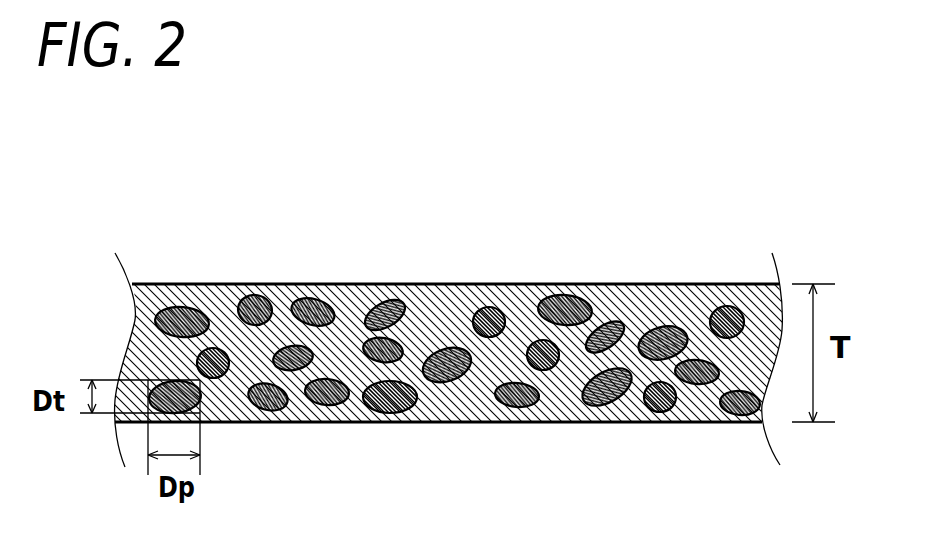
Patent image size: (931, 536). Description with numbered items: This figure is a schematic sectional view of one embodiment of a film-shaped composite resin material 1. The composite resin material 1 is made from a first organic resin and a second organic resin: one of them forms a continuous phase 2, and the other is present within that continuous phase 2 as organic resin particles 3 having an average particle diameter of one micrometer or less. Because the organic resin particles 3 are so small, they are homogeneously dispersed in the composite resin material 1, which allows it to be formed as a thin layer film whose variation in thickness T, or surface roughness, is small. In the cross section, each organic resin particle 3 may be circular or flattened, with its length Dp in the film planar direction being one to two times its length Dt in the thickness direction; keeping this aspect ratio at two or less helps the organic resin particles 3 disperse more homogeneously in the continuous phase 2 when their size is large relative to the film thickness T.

The composite resin material 1 is at (611, 211).
The continuous phase 2 is at (434, 318).
The organic resin particles 3 is at (188, 310).